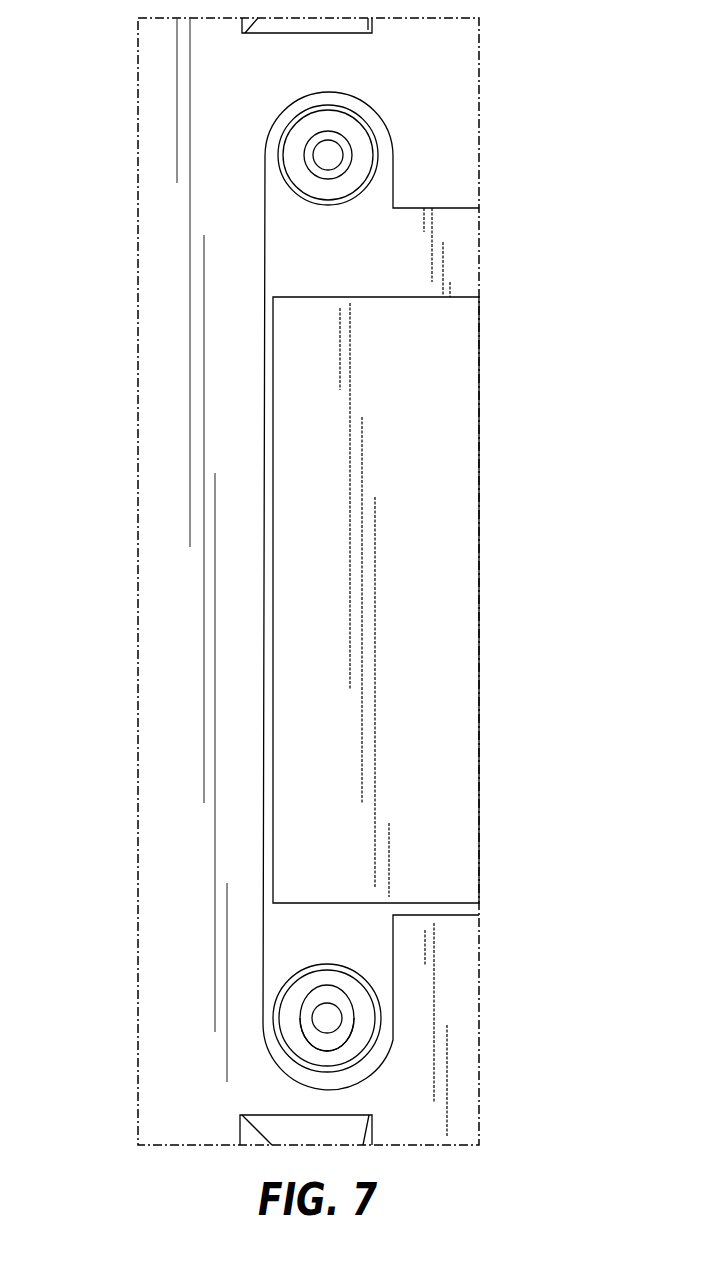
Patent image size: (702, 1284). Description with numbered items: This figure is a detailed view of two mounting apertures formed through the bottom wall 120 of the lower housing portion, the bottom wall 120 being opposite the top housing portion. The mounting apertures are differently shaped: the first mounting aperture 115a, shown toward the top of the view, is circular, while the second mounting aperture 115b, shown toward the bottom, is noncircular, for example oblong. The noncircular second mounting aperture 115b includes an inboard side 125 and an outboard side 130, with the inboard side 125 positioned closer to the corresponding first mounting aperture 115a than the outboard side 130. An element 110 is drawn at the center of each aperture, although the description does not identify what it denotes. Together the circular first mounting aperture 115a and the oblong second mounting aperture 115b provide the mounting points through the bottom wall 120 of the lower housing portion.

The fastener 110 is at (329, 155).
The first mounting aperture 115a is at (307, 170).
The second mounting aperture 115b is at (300, 1018).
The bottom wall 120 is at (437, 168).
The inboard side 125 is at (327, 985).
The outboard side 130 is at (327, 1052).